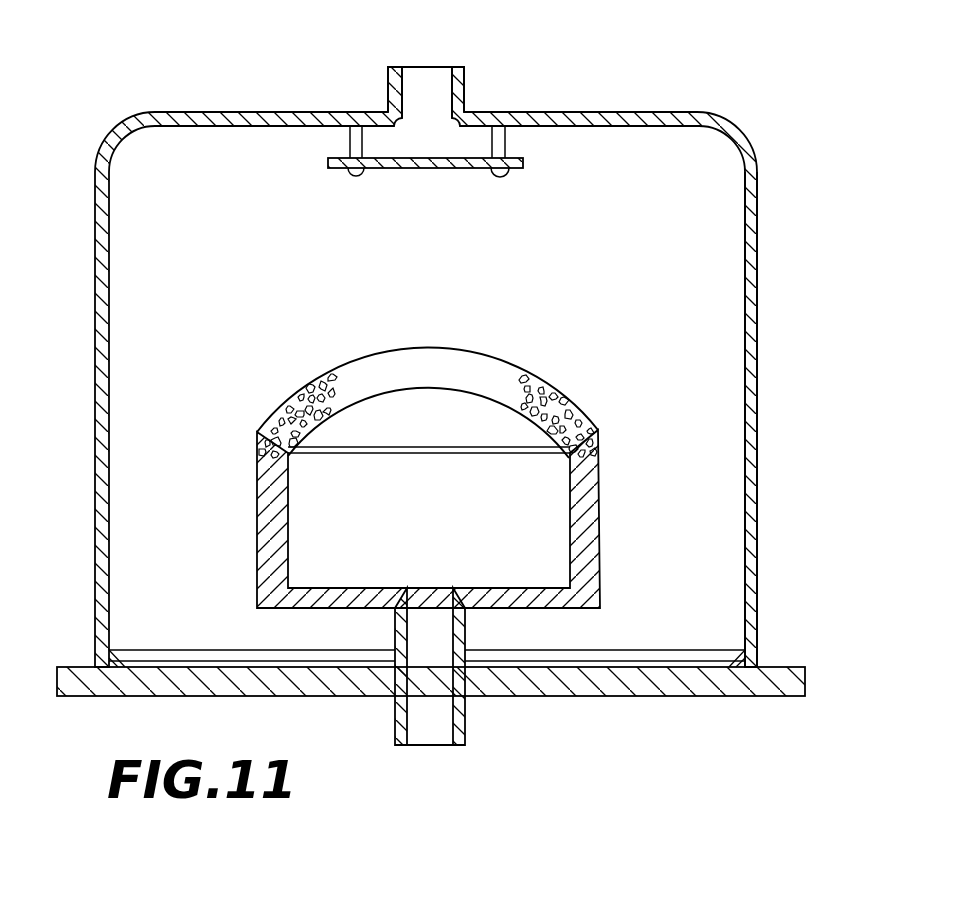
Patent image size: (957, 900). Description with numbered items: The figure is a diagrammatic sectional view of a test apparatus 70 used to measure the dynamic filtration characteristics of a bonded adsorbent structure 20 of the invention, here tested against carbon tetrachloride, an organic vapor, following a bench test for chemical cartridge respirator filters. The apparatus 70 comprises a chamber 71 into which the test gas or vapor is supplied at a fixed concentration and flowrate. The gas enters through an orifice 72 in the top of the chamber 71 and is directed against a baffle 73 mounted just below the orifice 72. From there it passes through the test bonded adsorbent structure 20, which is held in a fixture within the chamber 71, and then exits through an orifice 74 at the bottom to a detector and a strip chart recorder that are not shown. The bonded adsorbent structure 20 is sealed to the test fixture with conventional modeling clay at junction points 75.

The apparatus 70 is at (688, 110).
The chamber 71 is at (722, 336).
The orifice 72 is at (441, 67).
The baffle 73 is at (415, 168).
The bonded adsorbent structure 20 is at (489, 360).
The junction points 75 is at (598, 430).
The orifice 74 is at (420, 748).